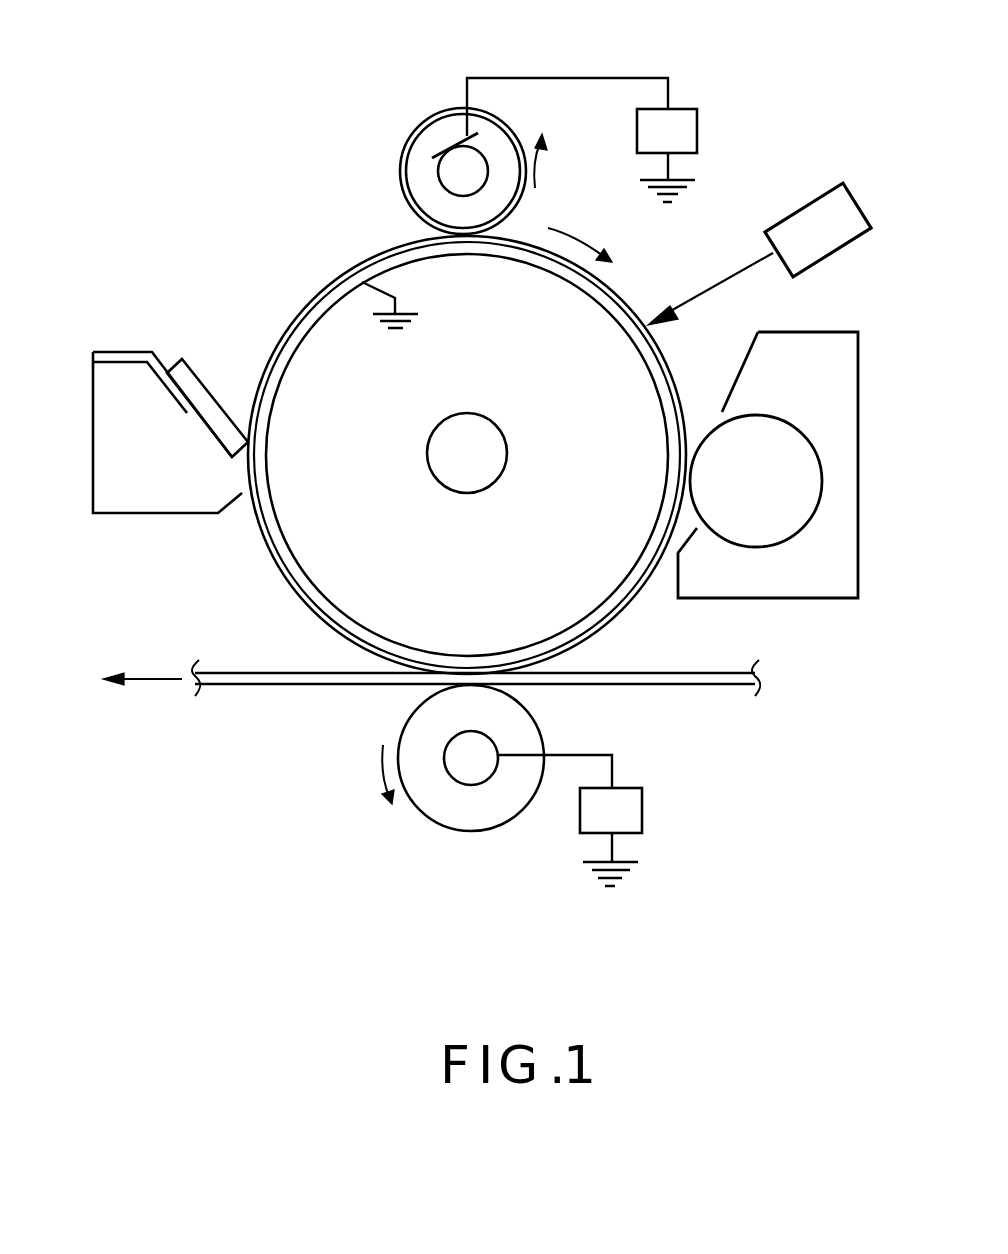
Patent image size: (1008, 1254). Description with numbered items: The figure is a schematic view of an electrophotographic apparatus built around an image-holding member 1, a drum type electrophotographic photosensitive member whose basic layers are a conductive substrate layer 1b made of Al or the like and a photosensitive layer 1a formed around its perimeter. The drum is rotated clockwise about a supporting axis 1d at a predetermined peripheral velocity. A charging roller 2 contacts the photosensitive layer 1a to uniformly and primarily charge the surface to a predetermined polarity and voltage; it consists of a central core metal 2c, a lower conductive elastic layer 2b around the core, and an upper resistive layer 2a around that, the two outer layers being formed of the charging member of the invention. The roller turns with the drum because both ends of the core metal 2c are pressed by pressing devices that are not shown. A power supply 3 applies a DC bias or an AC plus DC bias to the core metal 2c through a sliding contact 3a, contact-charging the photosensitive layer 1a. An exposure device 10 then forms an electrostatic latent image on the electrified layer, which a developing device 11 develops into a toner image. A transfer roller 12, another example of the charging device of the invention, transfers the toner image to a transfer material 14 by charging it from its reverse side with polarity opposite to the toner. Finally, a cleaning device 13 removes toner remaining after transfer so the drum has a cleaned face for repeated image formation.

The image-holding member 1 is at (419, 446).
The photosensitive layer 1a is at (318, 292).
The conductive substrate layer 1b is at (304, 306).
The supporting axis 1d is at (453, 475).
The charging roller 2 is at (398, 151).
The resistive layer 2a is at (413, 133).
The conductive elastic layer 2b is at (420, 167).
The core metal 2c is at (452, 183).
The power supply 3 is at (582, 482).
The sliding contact 3a is at (437, 153).
The exposure device 10 is at (759, 254).
The developing device 11 is at (848, 393).
The transfer roller 12 is at (442, 813).
The cleaning device 13 is at (100, 482).
The transfer material 14 is at (698, 685).